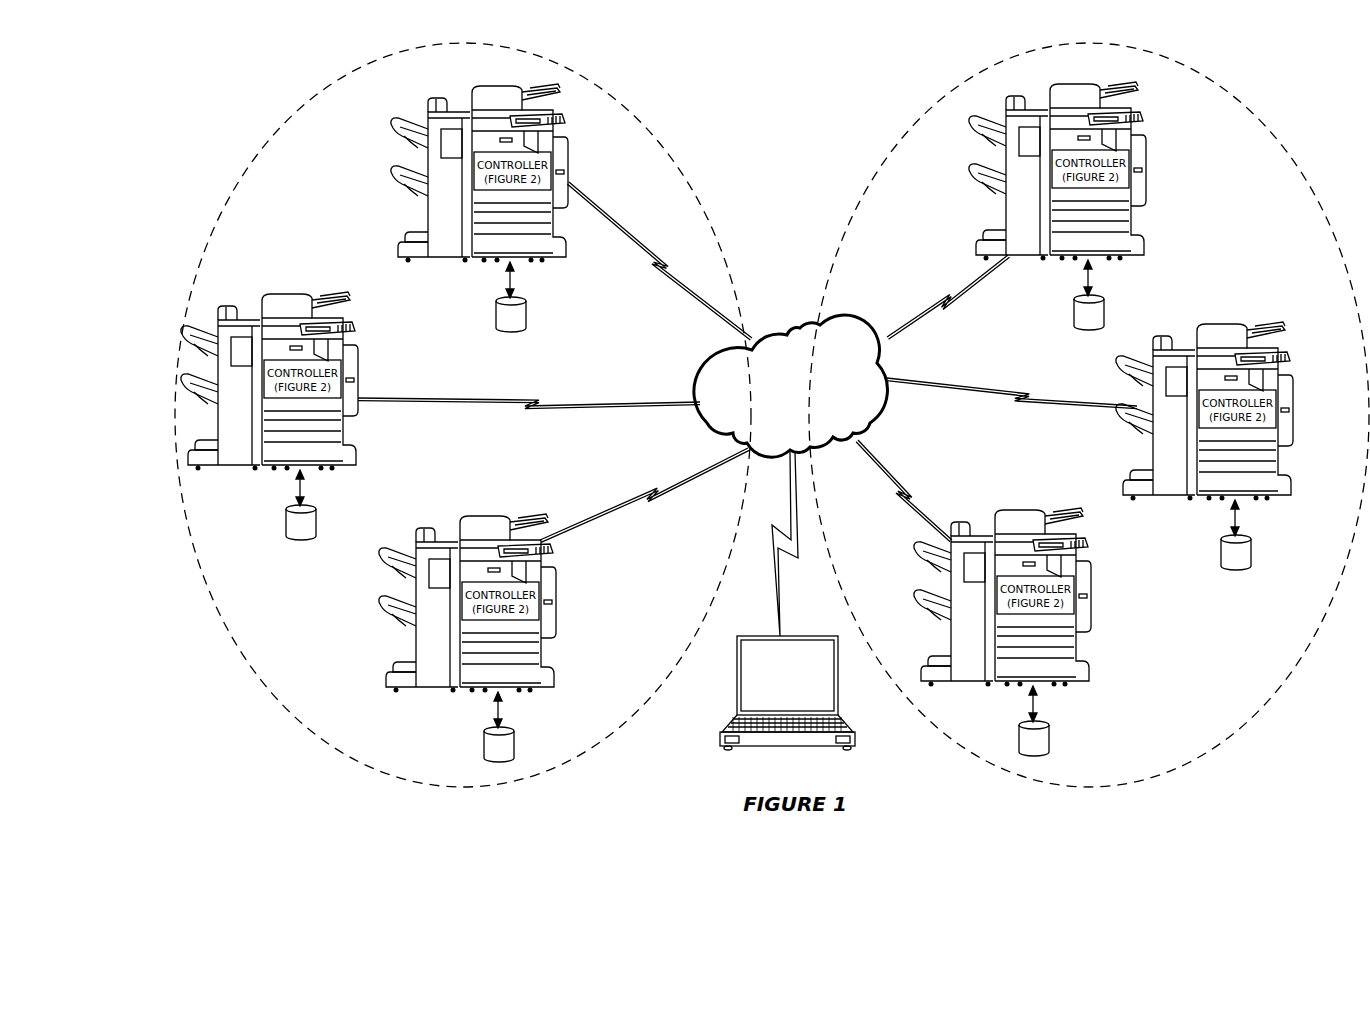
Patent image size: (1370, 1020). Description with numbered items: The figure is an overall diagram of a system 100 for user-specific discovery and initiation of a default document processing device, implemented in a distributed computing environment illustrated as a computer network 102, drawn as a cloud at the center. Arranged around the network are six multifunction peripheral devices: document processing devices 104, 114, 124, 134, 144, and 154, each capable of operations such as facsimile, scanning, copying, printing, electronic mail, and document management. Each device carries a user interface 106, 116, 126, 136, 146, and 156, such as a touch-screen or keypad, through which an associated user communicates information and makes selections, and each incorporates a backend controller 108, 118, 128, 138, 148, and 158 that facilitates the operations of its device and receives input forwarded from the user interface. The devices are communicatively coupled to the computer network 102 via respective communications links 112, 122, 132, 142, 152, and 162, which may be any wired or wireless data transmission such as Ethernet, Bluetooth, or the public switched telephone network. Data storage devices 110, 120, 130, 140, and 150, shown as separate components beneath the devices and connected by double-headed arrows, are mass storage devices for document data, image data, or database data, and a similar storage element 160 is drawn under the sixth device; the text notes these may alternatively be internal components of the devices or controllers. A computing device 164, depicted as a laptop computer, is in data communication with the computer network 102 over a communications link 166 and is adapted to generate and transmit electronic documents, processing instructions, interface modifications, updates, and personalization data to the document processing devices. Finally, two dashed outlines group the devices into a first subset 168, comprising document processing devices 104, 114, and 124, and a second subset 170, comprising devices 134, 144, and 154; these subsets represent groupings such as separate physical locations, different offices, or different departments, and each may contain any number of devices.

The system 100 is at (773, 127).
The computer network 102 is at (802, 326).
The document processing device 104 is at (497, 87).
The user interface 106 is at (563, 121).
The controller 108 is at (551, 163).
The data storage device 110 is at (524, 302).
The communications link 112 is at (667, 253).
The document processing device 114 is at (269, 371).
The user interface 116 is at (348, 324).
The controller 118 is at (330, 374).
The data storage device 120 is at (321, 505).
The communications link 122 is at (530, 396).
The document processing device 124 is at (467, 593).
The user interface 126 is at (546, 546).
The controller 128 is at (528, 596).
The data storage device 130 is at (519, 727).
The communications link 132 is at (650, 491).
The document processing device 134 is at (1057, 161).
The user interface 136 is at (1136, 114).
The controller 138 is at (1118, 164).
The data storage device 140 is at (1109, 295).
The communications link 142 is at (945, 301).
The document processing device 144 is at (1204, 401).
The user interface 146 is at (1283, 354).
The controller 148 is at (1265, 404).
The data storage device 150 is at (1256, 535).
The communications link 152 is at (1024, 393).
The document processing device 154 is at (1002, 587).
The user interface 156 is at (1081, 540).
The controller 158 is at (1063, 590).
The data storage 160 is at (1054, 721).
The communications link 162 is at (905, 495).
The computing device 164 is at (787, 635).
The communications link 166 is at (772, 525).
The first subset 168 is at (309, 727).
The second subset 170 is at (1239, 731).